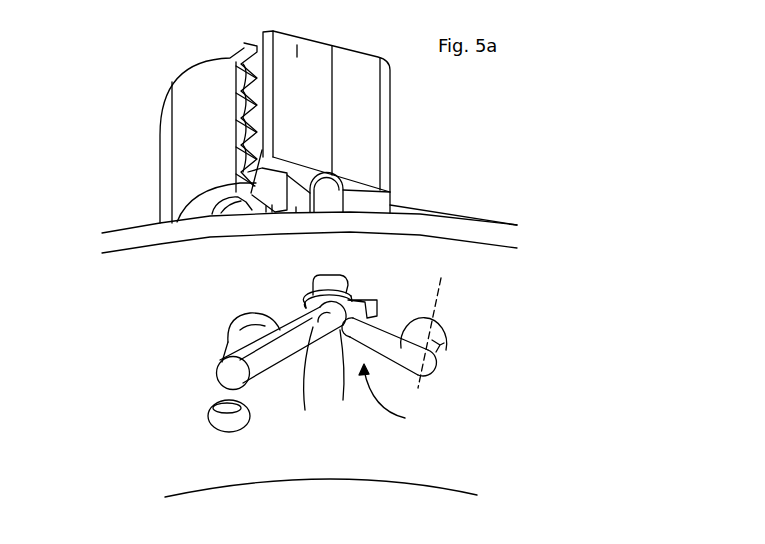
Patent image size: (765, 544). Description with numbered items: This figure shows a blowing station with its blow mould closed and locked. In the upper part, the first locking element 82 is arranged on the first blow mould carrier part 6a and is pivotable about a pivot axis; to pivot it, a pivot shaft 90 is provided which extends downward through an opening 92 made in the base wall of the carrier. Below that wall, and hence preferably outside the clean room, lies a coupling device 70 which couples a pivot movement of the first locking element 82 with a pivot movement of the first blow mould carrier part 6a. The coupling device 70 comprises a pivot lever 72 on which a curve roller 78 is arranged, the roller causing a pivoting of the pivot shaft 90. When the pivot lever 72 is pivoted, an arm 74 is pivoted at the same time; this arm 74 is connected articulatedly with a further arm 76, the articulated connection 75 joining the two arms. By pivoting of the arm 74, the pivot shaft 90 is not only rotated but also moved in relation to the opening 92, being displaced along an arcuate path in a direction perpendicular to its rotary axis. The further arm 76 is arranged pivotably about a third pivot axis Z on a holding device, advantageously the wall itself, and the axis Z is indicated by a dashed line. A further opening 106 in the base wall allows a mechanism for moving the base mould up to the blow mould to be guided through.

The first blow mould carrier part 6a is at (190, 153).
The first locking element 82 is at (297, 57).
The pivot shaft 90 is at (327, 198).
The opening 92 is at (357, 285).
The arm 74 is at (373, 303).
The further arm 76 is at (397, 342).
The curve roller 78 is at (230, 378).
The pivot lever 72 is at (293, 340).
The coupling device 70 is at (396, 400).
The articulated connection 75 is at (343, 400).
The opening 106 is at (214, 430).
The third pivot axis Z is at (450, 363).